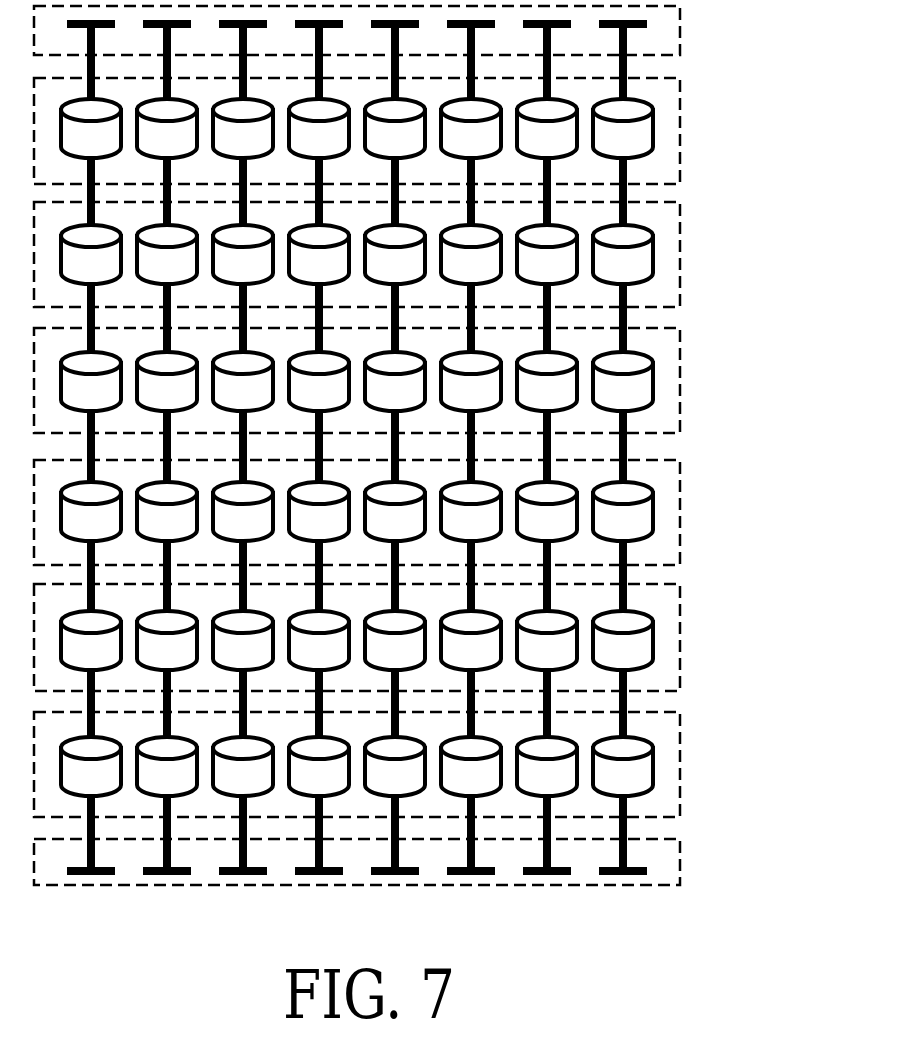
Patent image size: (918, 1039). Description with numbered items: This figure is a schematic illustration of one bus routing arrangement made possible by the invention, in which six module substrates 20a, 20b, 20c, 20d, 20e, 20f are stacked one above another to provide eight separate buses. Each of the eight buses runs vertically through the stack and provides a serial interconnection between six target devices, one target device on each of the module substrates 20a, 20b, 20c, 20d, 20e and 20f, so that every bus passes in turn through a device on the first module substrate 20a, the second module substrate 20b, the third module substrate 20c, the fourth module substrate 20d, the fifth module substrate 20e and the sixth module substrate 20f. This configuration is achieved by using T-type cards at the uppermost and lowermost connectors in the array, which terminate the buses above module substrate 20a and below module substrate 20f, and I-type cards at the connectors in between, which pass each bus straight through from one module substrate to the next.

The module substrate 20a is at (681, 123).
The module substrate 20b is at (681, 252).
The module substrate 20c is at (681, 372).
The module substrate 20d is at (681, 505).
The module substrate 20e is at (681, 635).
The module substrate 20f is at (681, 753).